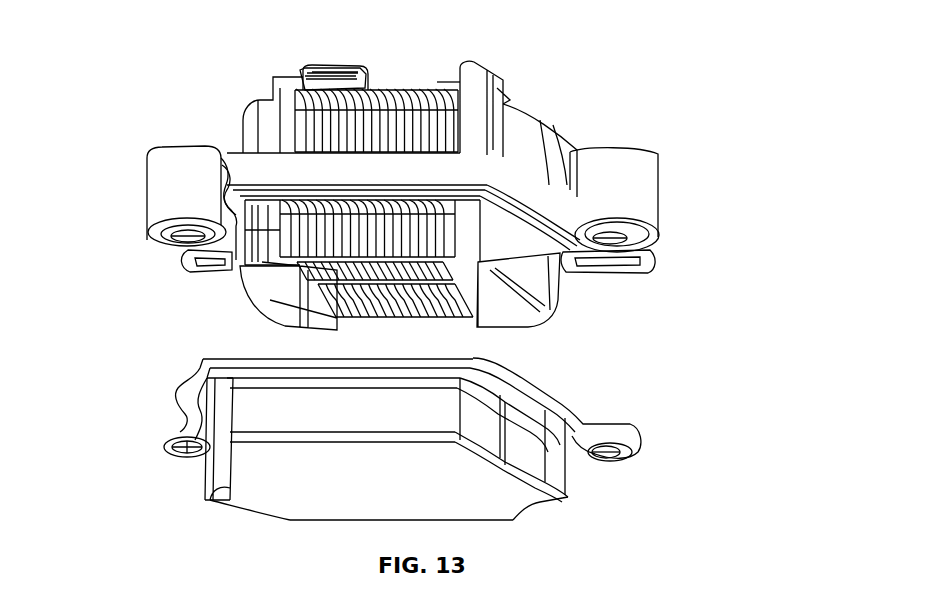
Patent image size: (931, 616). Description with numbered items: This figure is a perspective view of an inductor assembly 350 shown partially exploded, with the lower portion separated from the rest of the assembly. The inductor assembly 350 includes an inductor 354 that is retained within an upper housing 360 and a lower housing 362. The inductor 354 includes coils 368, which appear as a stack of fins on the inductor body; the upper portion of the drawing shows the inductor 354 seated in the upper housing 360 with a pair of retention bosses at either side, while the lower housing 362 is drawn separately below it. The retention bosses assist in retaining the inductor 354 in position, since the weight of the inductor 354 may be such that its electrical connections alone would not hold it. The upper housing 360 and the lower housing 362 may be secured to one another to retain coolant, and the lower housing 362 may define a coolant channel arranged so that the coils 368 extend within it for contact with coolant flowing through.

The inductor assembly 350 is at (425, 166).
The inductor 354 is at (413, 89).
The upper housing 360 is at (524, 193).
The lower housing 362 is at (185, 385).
The coils 368 is at (328, 97).